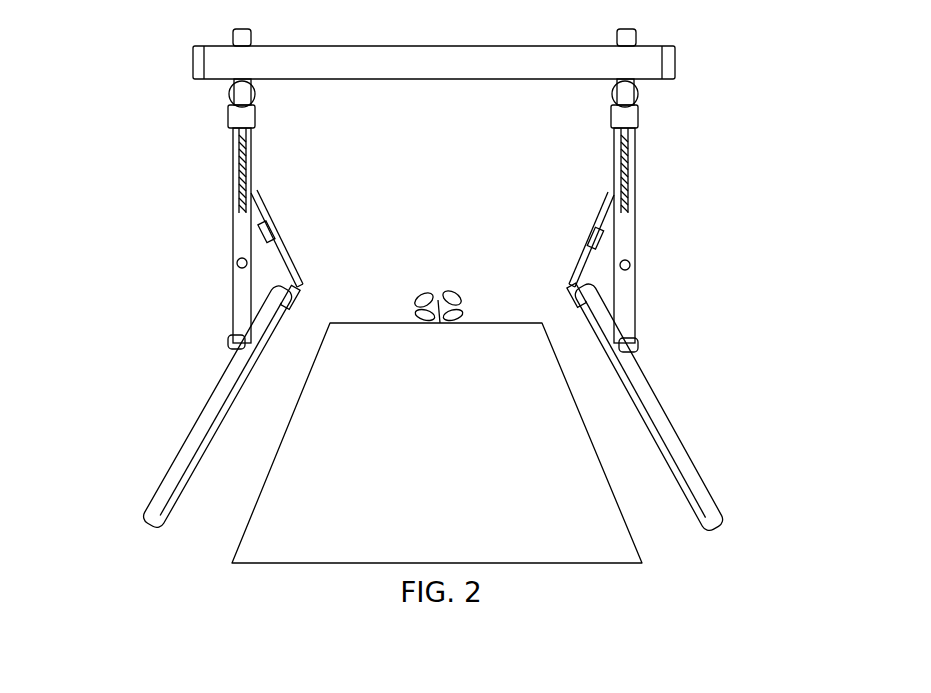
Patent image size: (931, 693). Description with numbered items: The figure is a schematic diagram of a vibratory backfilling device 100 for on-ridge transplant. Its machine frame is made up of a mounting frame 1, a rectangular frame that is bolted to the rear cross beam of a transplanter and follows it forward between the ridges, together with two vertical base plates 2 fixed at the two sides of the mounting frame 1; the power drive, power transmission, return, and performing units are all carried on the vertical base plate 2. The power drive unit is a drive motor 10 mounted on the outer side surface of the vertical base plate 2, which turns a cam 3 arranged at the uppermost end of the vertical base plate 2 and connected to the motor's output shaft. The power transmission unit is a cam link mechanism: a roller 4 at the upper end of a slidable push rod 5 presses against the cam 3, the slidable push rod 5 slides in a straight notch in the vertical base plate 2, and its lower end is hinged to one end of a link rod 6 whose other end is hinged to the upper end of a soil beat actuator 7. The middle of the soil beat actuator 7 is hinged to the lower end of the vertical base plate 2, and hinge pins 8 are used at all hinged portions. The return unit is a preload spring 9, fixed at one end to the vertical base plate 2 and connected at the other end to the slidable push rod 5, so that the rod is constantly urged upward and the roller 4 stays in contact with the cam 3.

The vibratory backfilling device 100 is at (695, 56).
The mounting frame 1 is at (602, 60).
The vertical base plate 2 is at (628, 238).
The cam 3 is at (632, 102).
The roller 4 is at (636, 137).
The slidable push rod 5 is at (232, 165).
The link rod 6 is at (627, 287).
The soil beat actuator 7 is at (220, 395).
The hinge pin 8 is at (232, 190).
The preload spring 9 is at (232, 220).
The drive motor 10 is at (232, 120).